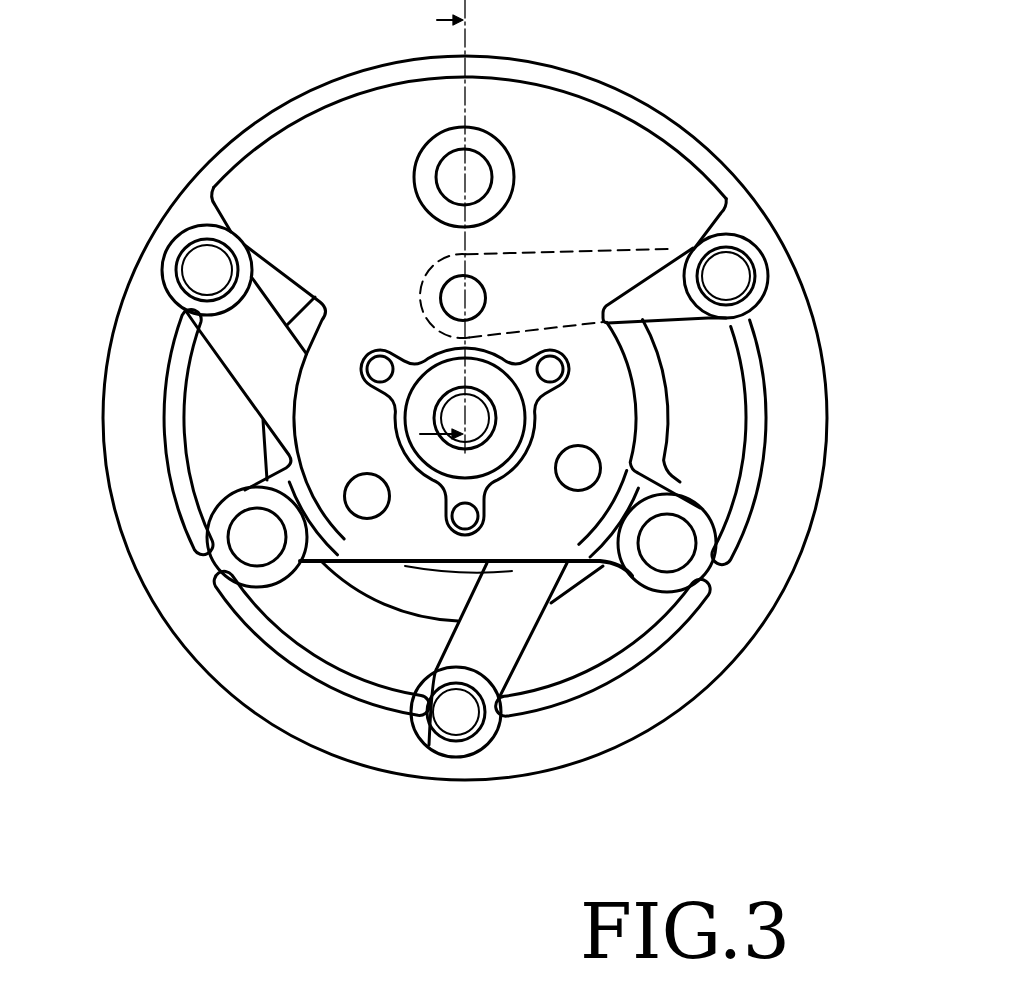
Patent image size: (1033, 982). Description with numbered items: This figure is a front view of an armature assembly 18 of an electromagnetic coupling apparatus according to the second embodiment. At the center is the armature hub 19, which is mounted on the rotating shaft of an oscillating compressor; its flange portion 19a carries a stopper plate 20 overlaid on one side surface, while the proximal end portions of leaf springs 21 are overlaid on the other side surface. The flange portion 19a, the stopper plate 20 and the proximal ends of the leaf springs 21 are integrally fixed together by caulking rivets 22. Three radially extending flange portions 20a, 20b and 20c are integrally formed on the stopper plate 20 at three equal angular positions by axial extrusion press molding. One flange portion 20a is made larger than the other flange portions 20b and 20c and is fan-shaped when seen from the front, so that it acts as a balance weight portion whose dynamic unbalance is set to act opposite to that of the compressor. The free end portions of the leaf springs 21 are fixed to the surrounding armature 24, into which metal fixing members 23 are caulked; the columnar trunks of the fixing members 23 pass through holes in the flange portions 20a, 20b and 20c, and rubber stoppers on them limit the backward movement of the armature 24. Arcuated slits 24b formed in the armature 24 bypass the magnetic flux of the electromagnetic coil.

The armature assembly 18 is at (480, 427).
The armature hub 19 is at (503, 453).
The flange portion 19a is at (432, 564).
The stopper plate 20 is at (642, 430).
The flange portion (balance weight portion) 20a is at (590, 115).
The flange portion 20b is at (762, 482).
The flange portion 20c is at (190, 440).
The leaf spring 21 is at (193, 238).
The rivet 22 is at (366, 485).
The fixing member 23 is at (513, 163).
The armature 24 is at (808, 292).
The arcuated slit 24b is at (172, 372).